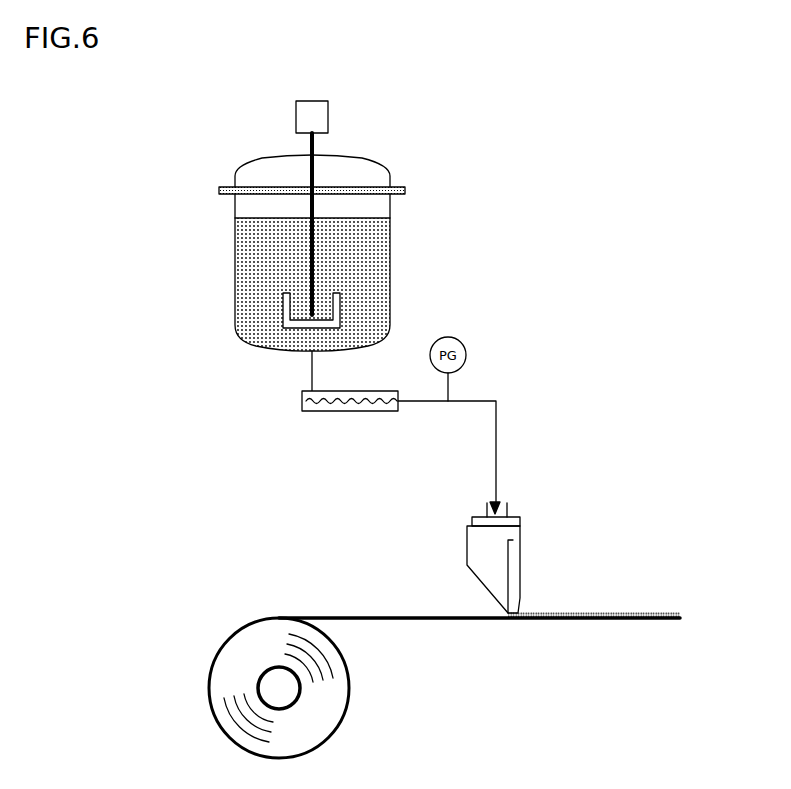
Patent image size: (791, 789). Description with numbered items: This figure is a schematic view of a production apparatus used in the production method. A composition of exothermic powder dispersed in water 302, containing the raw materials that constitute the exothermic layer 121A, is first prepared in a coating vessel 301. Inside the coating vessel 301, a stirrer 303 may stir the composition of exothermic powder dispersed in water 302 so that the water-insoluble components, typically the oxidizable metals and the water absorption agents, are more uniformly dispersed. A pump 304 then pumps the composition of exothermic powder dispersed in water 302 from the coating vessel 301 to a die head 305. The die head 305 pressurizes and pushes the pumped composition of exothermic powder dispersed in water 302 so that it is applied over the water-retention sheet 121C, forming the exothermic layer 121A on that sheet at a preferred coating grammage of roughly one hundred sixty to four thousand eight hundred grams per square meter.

The coating vessel 301 is at (378, 162).
The composition of exothermic powder dispersed in water 302 is at (377, 281).
The stirrer 303 is at (333, 308).
The pump 304 is at (314, 411).
The die head 305 is at (509, 540).
The exothermic layer 121A is at (567, 613).
The water-retention sheet 121C is at (240, 647).